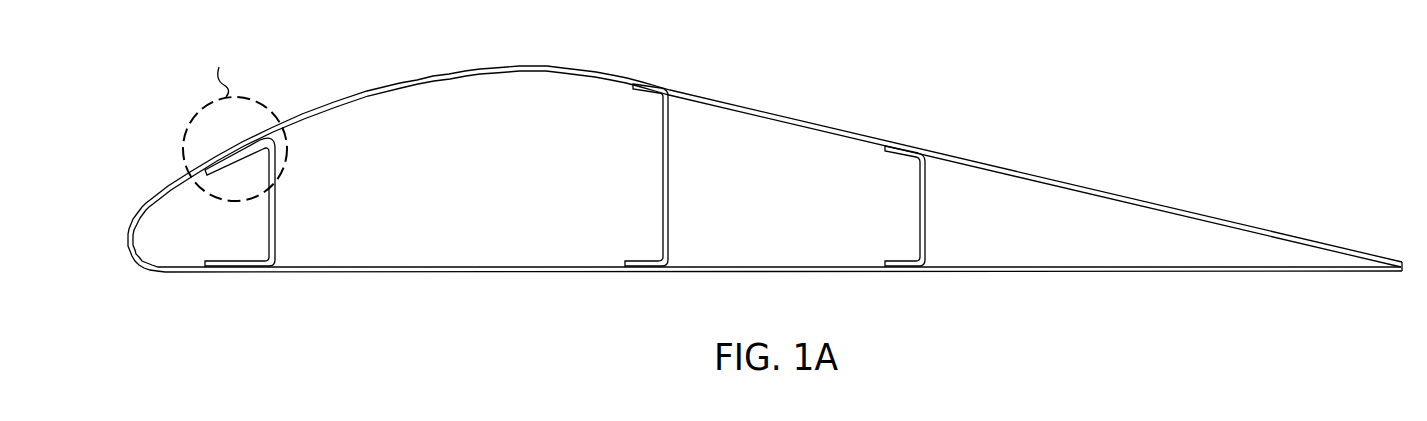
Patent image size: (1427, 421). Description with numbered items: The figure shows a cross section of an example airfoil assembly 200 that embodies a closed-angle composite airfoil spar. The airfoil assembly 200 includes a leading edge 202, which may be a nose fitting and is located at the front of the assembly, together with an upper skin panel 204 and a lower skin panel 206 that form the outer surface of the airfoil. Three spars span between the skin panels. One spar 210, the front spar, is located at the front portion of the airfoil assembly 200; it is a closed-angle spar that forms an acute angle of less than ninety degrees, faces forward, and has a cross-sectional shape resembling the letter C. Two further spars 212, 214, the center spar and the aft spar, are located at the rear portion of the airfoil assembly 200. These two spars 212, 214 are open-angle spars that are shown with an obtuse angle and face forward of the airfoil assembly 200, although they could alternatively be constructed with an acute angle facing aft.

The airfoil assembly 200 is at (1044, 90).
The leading edge 202 is at (150, 277).
The upper skin panel 204 is at (740, 106).
The lower skin panel 206 is at (1030, 272).
The spar 210 is at (277, 200).
The spar 212 is at (670, 174).
The spar 214 is at (926, 212).